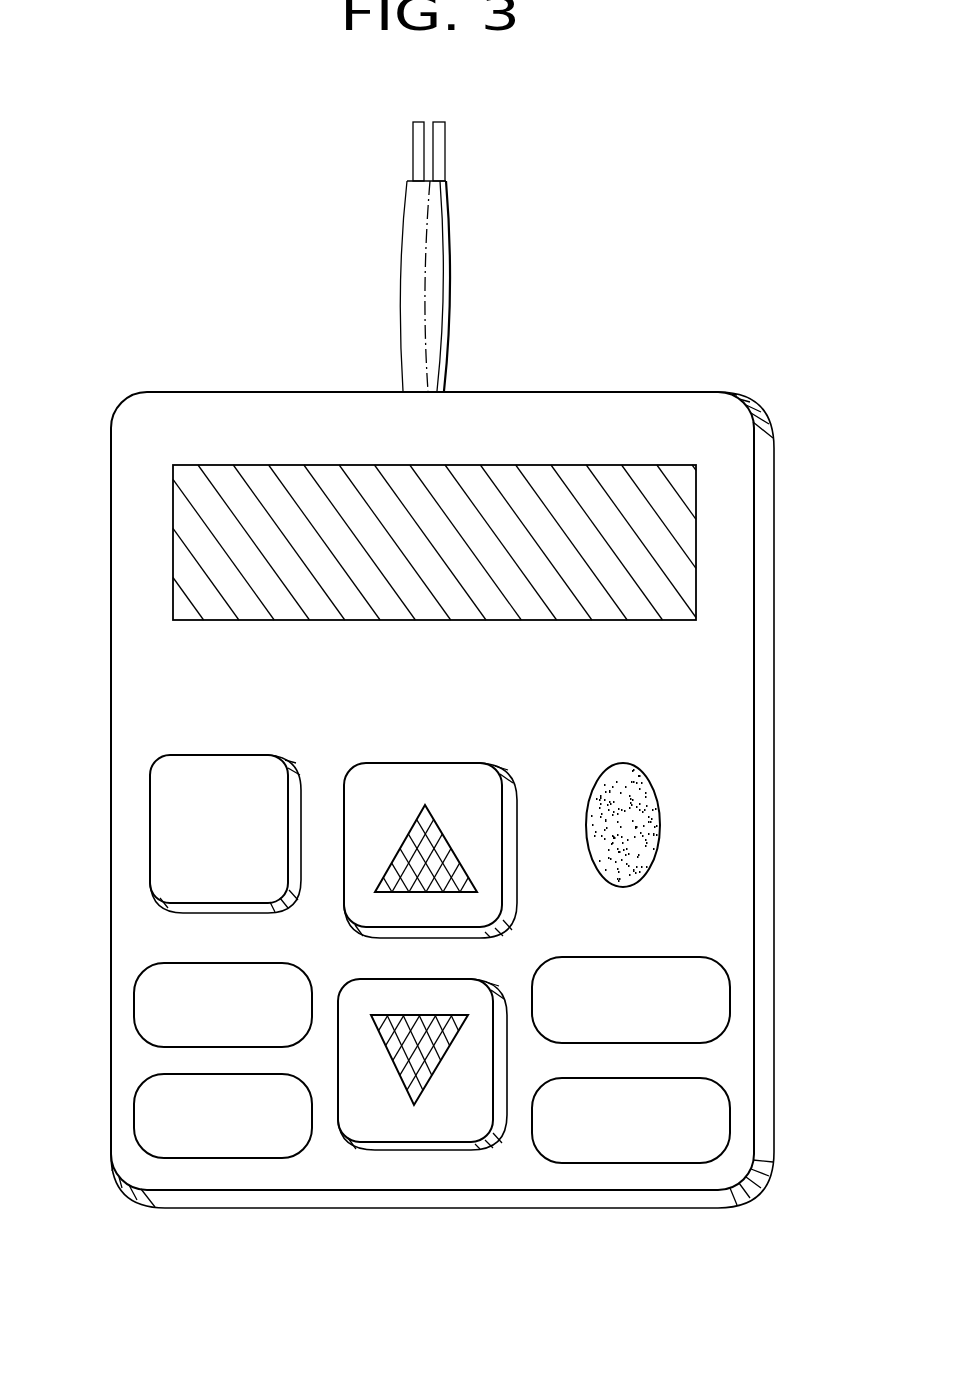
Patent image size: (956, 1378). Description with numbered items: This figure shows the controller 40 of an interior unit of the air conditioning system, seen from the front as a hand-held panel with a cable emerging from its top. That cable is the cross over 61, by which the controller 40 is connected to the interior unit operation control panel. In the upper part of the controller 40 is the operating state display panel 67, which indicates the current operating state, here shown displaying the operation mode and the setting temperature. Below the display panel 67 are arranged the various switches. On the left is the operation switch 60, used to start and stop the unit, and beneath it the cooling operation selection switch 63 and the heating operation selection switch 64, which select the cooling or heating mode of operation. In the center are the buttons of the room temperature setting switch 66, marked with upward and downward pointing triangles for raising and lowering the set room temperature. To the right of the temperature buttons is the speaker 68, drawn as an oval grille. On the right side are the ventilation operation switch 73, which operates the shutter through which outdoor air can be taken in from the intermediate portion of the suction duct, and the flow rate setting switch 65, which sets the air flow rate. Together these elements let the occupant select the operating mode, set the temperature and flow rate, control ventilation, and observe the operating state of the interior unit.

The controller 40 is at (708, 387).
The cross over 61 is at (430, 255).
The operating state display panel 67 is at (173, 518).
The operation switch 60 is at (150, 828).
The cooling operation selection switch 63 is at (134, 1012).
The heating operation selection switch 64 is at (134, 1122).
The flow rate setting switch 65 is at (730, 1110).
The room temperature setting switch 66 is at (410, 1152).
The speaker 68 is at (660, 807).
The ventilation operation switch 73 is at (730, 988).